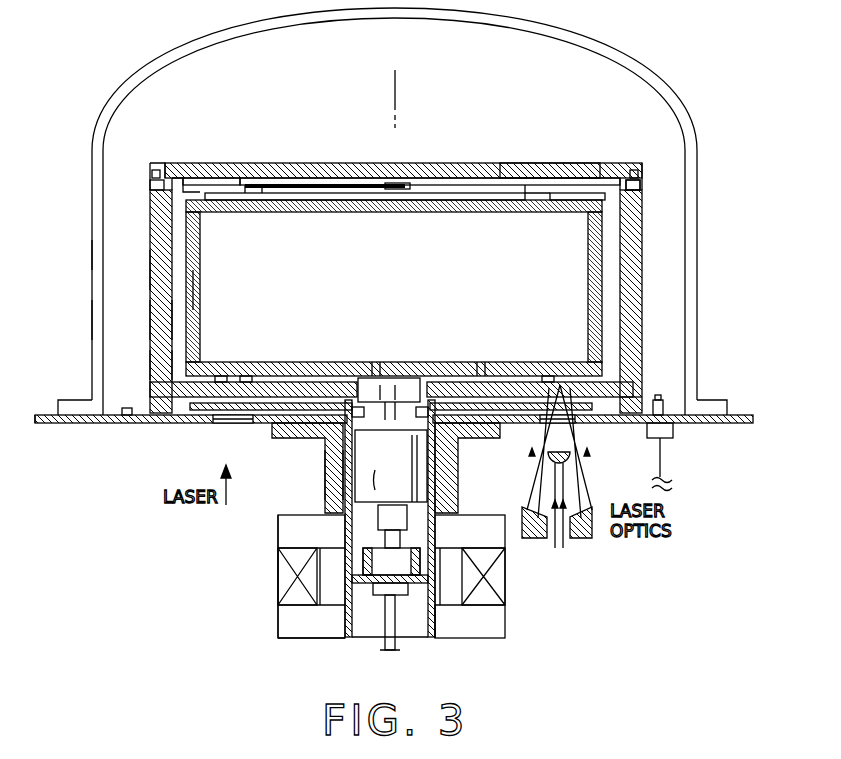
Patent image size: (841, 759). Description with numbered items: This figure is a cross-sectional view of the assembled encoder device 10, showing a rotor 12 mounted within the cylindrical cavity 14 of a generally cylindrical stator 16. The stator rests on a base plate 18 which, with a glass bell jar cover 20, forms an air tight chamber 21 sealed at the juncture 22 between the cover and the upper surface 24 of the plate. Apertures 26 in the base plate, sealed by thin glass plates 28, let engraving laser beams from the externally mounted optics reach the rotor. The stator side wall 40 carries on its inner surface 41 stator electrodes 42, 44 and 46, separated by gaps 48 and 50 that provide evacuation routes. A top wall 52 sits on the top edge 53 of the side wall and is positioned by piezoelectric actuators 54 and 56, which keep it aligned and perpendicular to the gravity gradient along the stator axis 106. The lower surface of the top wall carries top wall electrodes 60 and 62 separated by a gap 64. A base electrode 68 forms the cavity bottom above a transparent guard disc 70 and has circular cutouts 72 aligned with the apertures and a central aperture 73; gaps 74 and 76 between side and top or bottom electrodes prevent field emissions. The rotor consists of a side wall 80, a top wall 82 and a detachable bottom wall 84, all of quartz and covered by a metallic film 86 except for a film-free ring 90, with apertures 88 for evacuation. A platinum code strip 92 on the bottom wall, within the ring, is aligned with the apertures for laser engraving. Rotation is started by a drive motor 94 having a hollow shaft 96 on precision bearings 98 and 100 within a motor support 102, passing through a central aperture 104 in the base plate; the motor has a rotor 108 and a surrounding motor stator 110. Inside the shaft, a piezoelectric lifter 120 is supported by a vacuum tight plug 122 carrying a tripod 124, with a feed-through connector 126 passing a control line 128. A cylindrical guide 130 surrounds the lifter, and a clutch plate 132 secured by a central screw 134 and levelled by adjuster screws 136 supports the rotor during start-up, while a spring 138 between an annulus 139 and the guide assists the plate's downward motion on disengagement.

The encoder device 10 is at (580, 90).
The rotor 12 is at (484, 242).
The cylindrical cavity 14 is at (245, 186).
The stator 16 is at (151, 267).
The base plate 18 is at (75, 423).
The bell jar cover 20 is at (93, 318).
The air tight chamber 21 is at (110, 255).
The juncture 22 is at (60, 423).
The upper surface 24 is at (130, 423).
The apertures 26 is at (226, 424).
The thin glass plates 28 is at (245, 424).
The side wall 40 is at (160, 320).
The inner surface 41 is at (170, 358).
The stator electrode 42 is at (185, 226).
The stator electrode 44 is at (416, 193).
The stator electrode 46 is at (605, 264).
The gap 48 is at (262, 180).
The gap 50 is at (537, 192).
The top wall 52 is at (553, 166).
The top edge 53 is at (620, 178).
The piezoelectric actuator 54 is at (157, 190).
The piezoelectric actuator 56 is at (641, 195).
The top wall electrode 60 is at (322, 170).
The top wall electrode 62 is at (456, 178).
The gap 64 is at (390, 178).
The base electrode 68 is at (450, 385).
The guard disc 70 is at (276, 430).
The circular cutouts 72 is at (212, 410).
The central aperture 73 is at (356, 385).
The gap 74 is at (198, 183).
The gap 76 is at (625, 378).
The cylindrical side wall 80 is at (200, 264).
The top wall 82 is at (290, 212).
The bottom wall 84 is at (374, 363).
The metallic film 86 is at (195, 292).
The apertures 88 is at (303, 362).
The annular film-free ring 90 is at (222, 378).
The code strip 92 is at (247, 378).
The drive motor 94 is at (253, 603).
The hollow shaft 96 is at (345, 620).
The precision bearing 98 is at (278, 540).
The precision bearing 100 is at (330, 640).
The motor support 102 is at (326, 492).
The central aperture 104 is at (460, 446).
The central axis 106 is at (397, 77).
The motor rotor 108 is at (468, 565).
The motor stator 110 is at (505, 590).
The piezoelectric lifter 120 is at (408, 520).
The vacuum tight plug 122 is at (436, 600).
The tripod 124 is at (378, 583).
The coaxial electrical feed-through connector 126 is at (398, 595).
The control line 128 is at (386, 640).
The cylindrical guide 130 is at (432, 480).
The clutch plate 132 is at (410, 378).
The central screw 134 is at (402, 385).
The adjuster screws 136 is at (383, 485).
The spring 138 is at (392, 430).
The annulus 139 is at (421, 407).